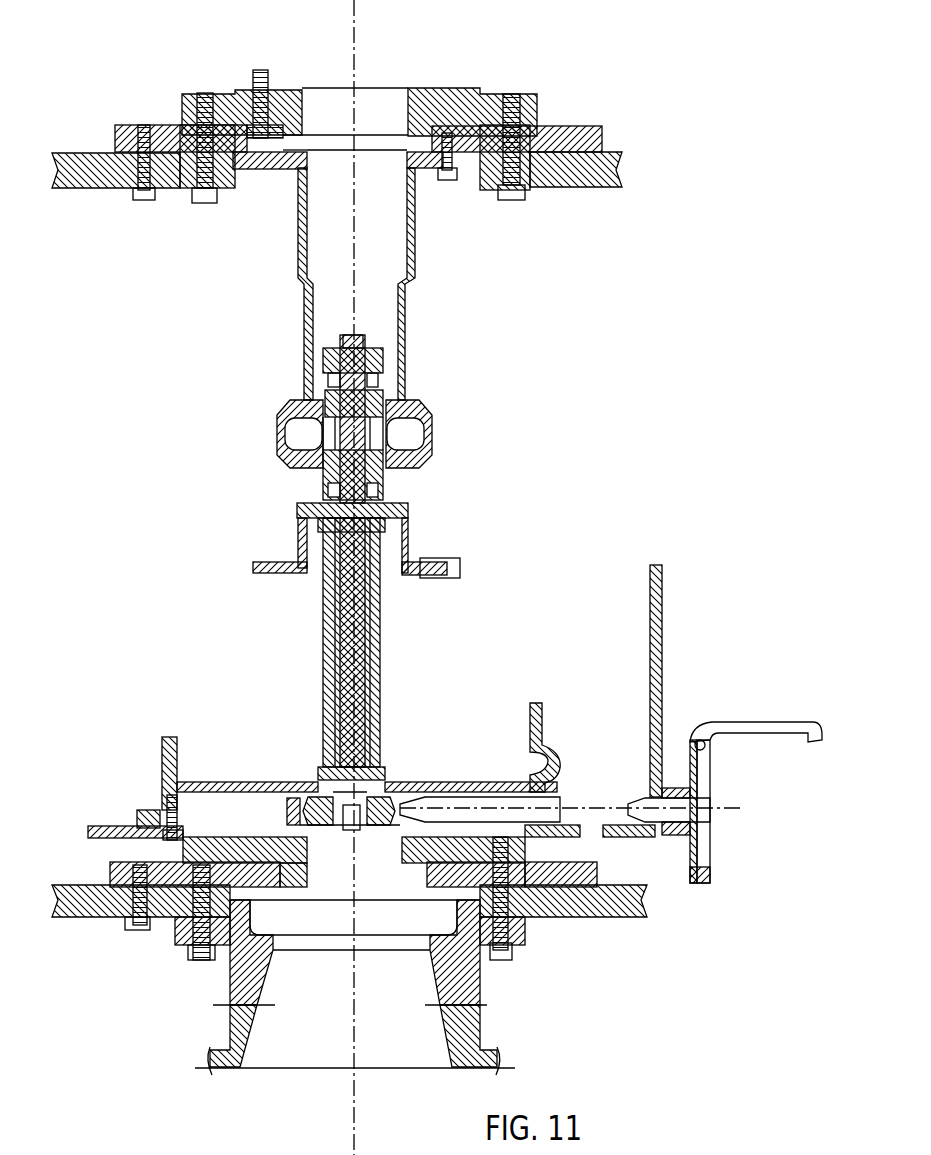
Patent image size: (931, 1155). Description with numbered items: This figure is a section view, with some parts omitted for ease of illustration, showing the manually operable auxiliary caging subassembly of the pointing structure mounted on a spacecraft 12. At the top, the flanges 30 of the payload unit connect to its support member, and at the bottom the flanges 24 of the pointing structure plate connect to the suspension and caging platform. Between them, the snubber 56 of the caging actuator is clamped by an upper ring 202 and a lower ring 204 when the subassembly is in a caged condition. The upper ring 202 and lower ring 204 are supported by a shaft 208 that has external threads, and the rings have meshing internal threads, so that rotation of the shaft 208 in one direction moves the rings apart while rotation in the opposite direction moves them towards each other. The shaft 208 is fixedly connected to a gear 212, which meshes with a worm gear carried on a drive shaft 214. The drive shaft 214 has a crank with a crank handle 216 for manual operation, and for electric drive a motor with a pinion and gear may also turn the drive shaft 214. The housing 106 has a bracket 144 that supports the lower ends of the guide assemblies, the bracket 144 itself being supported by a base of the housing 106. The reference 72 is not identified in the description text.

The axis of rotation 72 is at (357, 22).
The flanges 30 is at (462, 88).
The snubber 56 is at (418, 290).
The upper ring 202 is at (385, 395).
The lower ring 204 is at (323, 456).
The bracket 144 is at (265, 578).
The shaft 208 is at (360, 590).
The housing 106 is at (162, 760).
The gear 212 is at (388, 825).
The drive shaft 214 is at (557, 800).
The crank handle 216 is at (752, 722).
The flanges 24 is at (230, 1030).
The spacecraft 12 is at (280, 813).